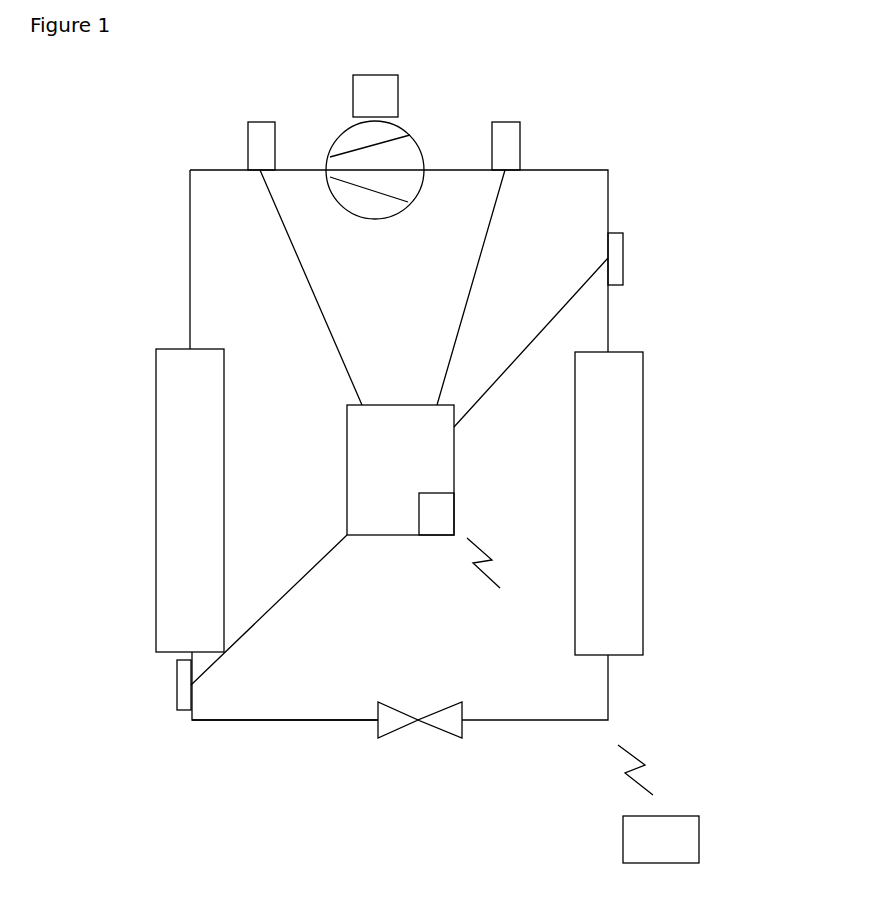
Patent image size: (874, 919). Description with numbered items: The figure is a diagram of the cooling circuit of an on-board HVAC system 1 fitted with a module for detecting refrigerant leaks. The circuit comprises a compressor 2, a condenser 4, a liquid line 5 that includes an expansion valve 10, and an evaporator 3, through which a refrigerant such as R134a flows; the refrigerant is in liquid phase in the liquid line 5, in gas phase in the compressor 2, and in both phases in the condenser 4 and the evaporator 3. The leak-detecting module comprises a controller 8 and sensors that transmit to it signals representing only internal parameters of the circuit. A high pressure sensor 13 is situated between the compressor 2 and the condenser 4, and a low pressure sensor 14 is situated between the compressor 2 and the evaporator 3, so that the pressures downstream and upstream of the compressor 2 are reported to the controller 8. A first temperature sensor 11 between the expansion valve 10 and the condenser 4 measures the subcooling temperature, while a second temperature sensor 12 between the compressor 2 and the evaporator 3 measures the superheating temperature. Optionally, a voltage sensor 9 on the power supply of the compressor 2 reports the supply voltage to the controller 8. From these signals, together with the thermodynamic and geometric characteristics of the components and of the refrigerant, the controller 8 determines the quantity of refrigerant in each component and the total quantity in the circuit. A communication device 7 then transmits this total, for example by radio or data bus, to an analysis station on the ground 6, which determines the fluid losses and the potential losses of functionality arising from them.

The HVAC system 1 is at (593, 138).
The compressor 2 is at (418, 137).
The evaporator 3 is at (643, 477).
The condenser 4 is at (157, 465).
The liquid line 5 is at (321, 722).
The analysis station on the ground 6 is at (699, 843).
The communication device 7 is at (456, 508).
The controller 8 is at (398, 535).
The voltage sensor 9 is at (353, 86).
The expansion valve 10 is at (462, 736).
The first temperature sensor 11 is at (177, 708).
The second temperature sensor 12 is at (623, 258).
The high pressure sensor 13 is at (248, 137).
The low pressure sensor 14 is at (518, 122).